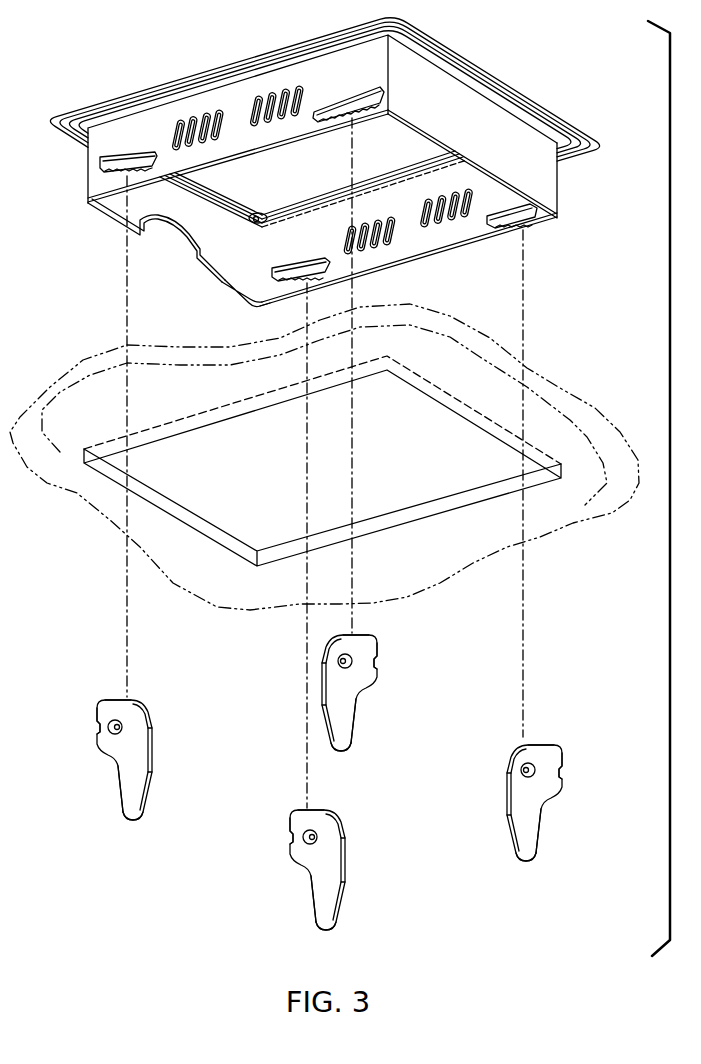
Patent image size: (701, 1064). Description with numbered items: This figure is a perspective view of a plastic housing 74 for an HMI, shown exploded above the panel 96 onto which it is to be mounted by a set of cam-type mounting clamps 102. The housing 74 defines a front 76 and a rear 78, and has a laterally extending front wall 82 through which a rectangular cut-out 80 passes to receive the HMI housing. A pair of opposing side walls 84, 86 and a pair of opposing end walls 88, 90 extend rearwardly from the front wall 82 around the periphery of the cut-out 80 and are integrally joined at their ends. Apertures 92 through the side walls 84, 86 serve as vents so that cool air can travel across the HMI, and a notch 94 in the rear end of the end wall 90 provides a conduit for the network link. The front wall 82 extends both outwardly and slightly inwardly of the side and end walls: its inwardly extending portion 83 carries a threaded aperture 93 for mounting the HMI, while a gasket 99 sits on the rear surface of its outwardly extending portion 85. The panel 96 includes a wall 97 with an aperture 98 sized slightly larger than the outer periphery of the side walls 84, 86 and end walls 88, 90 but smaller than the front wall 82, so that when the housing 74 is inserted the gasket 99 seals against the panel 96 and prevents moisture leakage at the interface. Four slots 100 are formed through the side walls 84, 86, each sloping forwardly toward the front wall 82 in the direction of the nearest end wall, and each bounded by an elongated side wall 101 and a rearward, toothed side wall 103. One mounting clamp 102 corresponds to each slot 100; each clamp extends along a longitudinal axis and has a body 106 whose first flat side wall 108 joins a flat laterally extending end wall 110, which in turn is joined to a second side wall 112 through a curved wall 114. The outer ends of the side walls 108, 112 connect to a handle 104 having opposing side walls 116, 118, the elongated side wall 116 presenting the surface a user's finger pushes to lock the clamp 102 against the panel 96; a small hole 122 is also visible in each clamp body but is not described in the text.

The plastic housing 74 is at (38, 116).
The front 76 is at (283, 26).
The rear 78 is at (246, 281).
The rectangular cut-out 80 is at (277, 197).
The front wall 82 is at (118, 92).
The inwardly extending portion 83 is at (382, 172).
The side wall 84 is at (290, 141).
The outwardly extending portion 85 is at (66, 142).
The side wall 86 is at (446, 254).
The end wall 88 is at (470, 140).
The end wall 90 is at (183, 227).
The apertures 92 is at (220, 114).
The threaded aperture 93 is at (254, 221).
The notch 94 is at (170, 250).
The panel 96 is at (577, 378).
The wall 97 is at (57, 458).
The aperture 98 is at (242, 524).
The gasket 99 is at (330, 46).
The slots 100 is at (143, 151).
The side wall 101 is at (116, 154).
The mounting clamps 102 is at (106, 820).
The side wall 103 is at (110, 175).
The handle 104 is at (150, 809).
The body 106 is at (88, 737).
The first side wall 108 is at (95, 707).
The end wall 110 is at (112, 700).
The second side wall 112 is at (153, 753).
The curved wall 114 is at (146, 712).
The handle side wall 116 is at (118, 786).
The handle side wall 118 is at (149, 790).
The bracket hole 122 is at (110, 736).